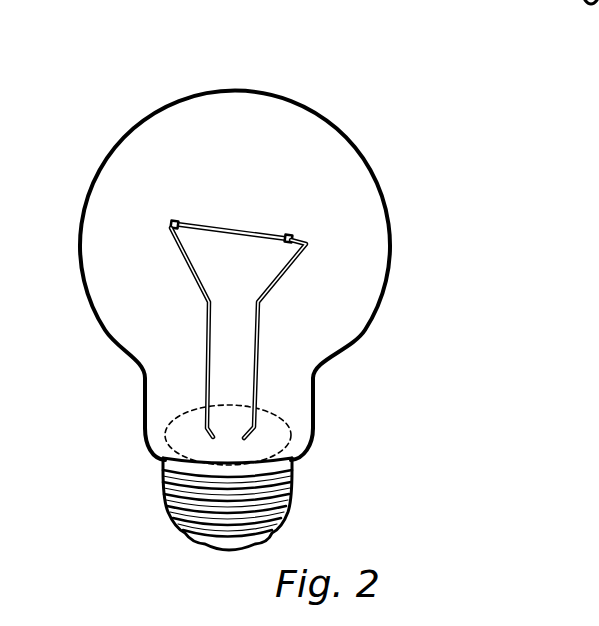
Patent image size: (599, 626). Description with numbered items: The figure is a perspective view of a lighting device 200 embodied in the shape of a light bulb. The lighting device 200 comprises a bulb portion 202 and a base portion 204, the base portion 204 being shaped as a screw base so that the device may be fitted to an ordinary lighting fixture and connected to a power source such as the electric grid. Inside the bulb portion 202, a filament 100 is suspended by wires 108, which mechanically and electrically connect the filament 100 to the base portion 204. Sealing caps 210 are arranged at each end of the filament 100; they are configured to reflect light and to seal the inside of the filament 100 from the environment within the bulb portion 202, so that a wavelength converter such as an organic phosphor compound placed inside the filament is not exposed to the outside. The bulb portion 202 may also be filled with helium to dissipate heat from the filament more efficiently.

The lighting device 200 is at (318, 66).
The bulb portion 202 is at (428, 108).
The base portion 204 is at (428, 458).
The filament 100 is at (277, 212).
The sealing caps 210 is at (176, 222).
The wires 108 is at (203, 285).